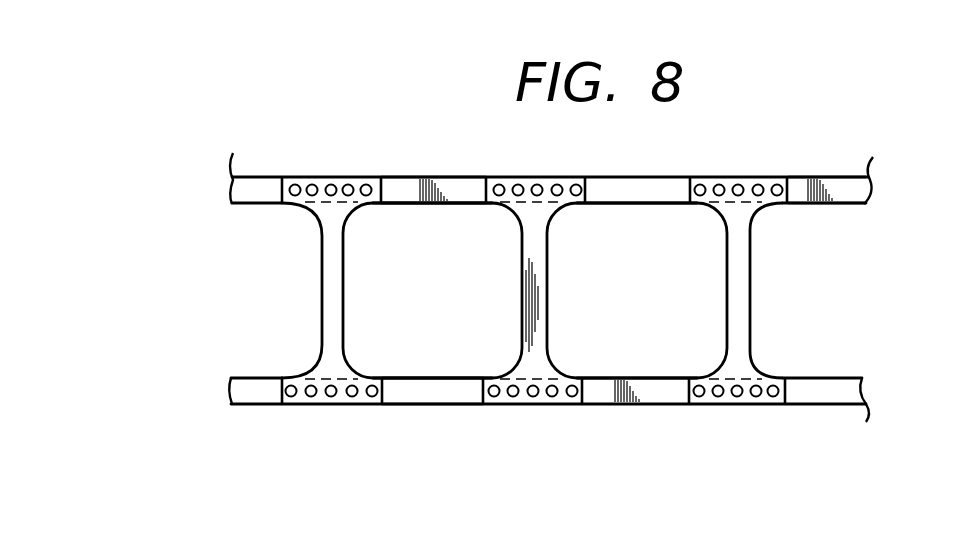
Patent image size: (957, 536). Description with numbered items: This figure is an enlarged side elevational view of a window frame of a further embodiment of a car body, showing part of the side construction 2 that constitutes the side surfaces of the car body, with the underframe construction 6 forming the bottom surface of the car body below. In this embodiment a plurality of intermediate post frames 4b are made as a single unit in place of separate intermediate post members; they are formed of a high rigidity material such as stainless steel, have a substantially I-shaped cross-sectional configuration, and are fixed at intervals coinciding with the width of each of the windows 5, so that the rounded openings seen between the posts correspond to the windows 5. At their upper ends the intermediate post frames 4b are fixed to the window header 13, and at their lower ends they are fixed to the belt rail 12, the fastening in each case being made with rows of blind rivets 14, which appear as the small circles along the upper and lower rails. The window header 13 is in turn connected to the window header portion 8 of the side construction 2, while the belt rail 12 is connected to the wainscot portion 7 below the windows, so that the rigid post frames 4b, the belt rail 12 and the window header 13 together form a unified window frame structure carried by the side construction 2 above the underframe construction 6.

The side construction 2 is at (873, 157).
The intermediate post frames 4b is at (743, 296).
The windows 5 is at (650, 218).
The underframe construction 6 is at (849, 391).
The wainscot portion 7 is at (850, 188).
The window header portion 8 is at (242, 166).
The belt rail 12 is at (462, 388).
The window header 13 is at (405, 185).
The blind rivets 14 is at (738, 189).